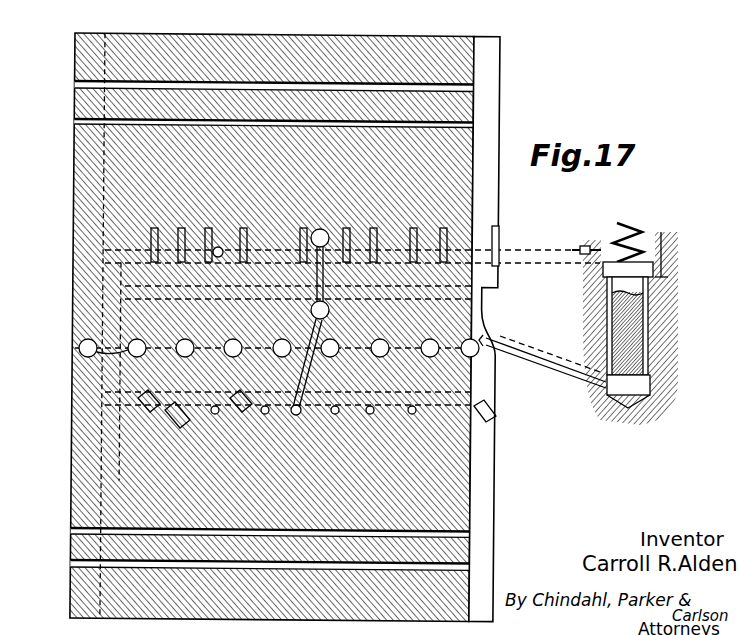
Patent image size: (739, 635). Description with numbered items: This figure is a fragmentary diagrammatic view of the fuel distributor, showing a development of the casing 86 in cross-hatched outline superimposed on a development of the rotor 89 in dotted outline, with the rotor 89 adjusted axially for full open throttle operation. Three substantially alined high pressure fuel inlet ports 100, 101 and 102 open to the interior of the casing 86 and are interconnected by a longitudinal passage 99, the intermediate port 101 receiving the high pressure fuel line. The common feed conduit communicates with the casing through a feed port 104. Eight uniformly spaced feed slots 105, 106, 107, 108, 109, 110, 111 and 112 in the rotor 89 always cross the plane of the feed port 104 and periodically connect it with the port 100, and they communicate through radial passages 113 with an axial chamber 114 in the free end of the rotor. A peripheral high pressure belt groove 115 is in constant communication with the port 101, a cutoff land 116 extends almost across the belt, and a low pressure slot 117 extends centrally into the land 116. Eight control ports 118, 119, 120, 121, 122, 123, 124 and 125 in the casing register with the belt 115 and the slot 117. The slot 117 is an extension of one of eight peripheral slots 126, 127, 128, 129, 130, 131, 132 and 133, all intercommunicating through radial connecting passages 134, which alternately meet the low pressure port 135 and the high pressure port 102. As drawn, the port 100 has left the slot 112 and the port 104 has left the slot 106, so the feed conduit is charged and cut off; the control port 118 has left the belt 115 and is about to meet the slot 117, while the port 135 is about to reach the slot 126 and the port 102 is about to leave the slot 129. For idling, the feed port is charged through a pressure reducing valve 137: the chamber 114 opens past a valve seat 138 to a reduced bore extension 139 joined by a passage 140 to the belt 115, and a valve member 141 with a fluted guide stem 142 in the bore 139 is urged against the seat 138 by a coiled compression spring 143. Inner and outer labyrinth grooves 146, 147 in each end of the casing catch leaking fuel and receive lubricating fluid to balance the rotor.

The casing 86 is at (80, 456).
The rotor 89 is at (492, 366).
The longitudinal passage 99 is at (324, 280).
The high pressure fuel inlet port 100 is at (320, 229).
The intermediate high pressure fuel inlet port 101 is at (330, 312).
The high pressure fuel inlet port 102 is at (298, 416).
The feed port 104 is at (224, 256).
The feed slot 105 is at (244, 228).
The feed slot 106 is at (208, 228).
The feed slot 107 is at (178, 230).
The feed slot 108 is at (152, 228).
The feed slot 109 is at (416, 232).
The feed slot 110 is at (376, 232).
The feed slot 111 is at (350, 238).
The feed slot 112 is at (303, 228).
The radial passage 113 is at (524, 262).
The axial chamber 114 is at (666, 244).
The high pressure belt groove 115 is at (270, 270).
The cutoff land 116 is at (252, 292).
The low pressure slot 117 is at (280, 330).
The control port 118 is at (276, 356).
The control port 119 is at (230, 357).
The control port 120 is at (194, 343).
The control port 121 is at (146, 343).
The control port 122 is at (104, 354).
The control port 123 is at (440, 341).
The control port 124 is at (388, 344).
The control port 125 is at (338, 355).
The low pressure slot 126 is at (418, 418).
The low pressure slot 127 is at (376, 418).
The low pressure slot 128 is at (334, 418).
The low pressure slot 129 is at (270, 420).
The low pressure slot 130 is at (226, 420).
The low pressure slot 131 is at (186, 436).
The low pressure slot 132 is at (142, 418).
The low pressure slot 133 is at (494, 422).
The radial connecting passage 134 is at (414, 400).
The low pressure port 135 is at (450, 462).
The pressure reducing valve 137 is at (682, 276).
The valve seat 138 is at (584, 296).
The reduced axial bore extension 139 is at (652, 350).
The passage 140 is at (550, 344).
The valve member 141 is at (648, 286).
The fluted guide stem 142 is at (632, 334).
The coiled compression spring 143 is at (636, 228).
The inner labyrinth groove 146 is at (376, 126).
The outer labyrinth groove 147 is at (364, 88).